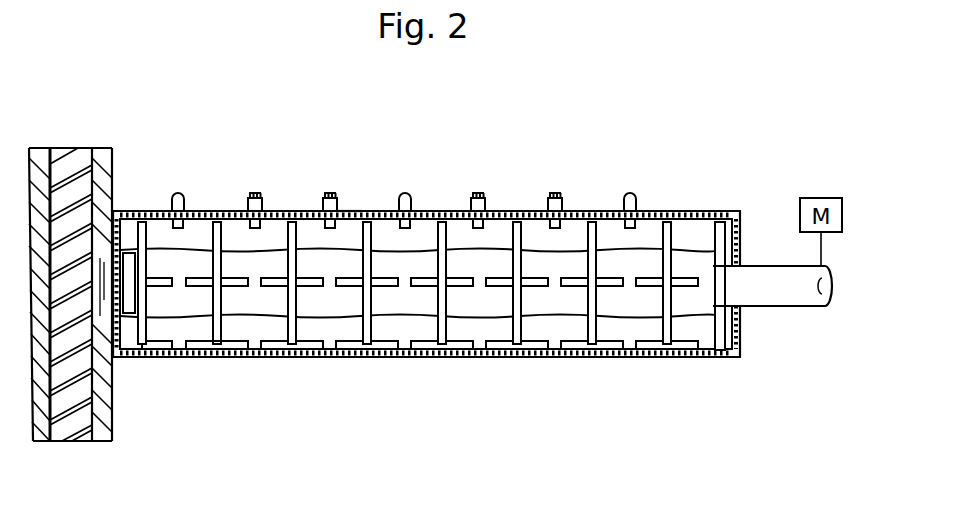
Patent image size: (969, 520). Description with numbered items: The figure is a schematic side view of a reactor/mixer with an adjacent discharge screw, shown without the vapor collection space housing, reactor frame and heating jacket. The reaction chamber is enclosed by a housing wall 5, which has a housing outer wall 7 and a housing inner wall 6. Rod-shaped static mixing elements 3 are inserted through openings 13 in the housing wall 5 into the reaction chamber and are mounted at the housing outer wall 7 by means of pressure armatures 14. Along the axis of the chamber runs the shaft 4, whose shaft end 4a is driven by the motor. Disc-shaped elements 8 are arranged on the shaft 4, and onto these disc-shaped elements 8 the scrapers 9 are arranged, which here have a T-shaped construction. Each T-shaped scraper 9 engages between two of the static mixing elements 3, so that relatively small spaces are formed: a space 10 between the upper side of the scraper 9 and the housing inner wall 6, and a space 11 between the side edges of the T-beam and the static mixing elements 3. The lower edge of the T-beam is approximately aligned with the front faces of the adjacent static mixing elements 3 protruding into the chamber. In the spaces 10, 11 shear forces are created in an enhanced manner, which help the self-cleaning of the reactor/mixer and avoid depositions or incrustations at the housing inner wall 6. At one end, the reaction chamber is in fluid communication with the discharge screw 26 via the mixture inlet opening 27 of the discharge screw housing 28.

The static mixing element 3 is at (278, 211).
The shaft 4 is at (710, 306).
The shaft end 4a is at (780, 297).
The housing wall 5 is at (238, 364).
The housing inner wall 6 is at (245, 357).
The housing outer wall 7 is at (210, 211).
The disc-shaped element 8 is at (695, 211).
The scraper 9 is at (657, 211).
The space 10 is at (350, 211).
The space 11 is at (377, 216).
The opening 13 is at (580, 211).
The pressure armature 14 is at (258, 192).
The discharge screw 26 is at (82, 150).
The mixture inlet opening 27 is at (104, 297).
The discharge screw housing 28 is at (37, 148).